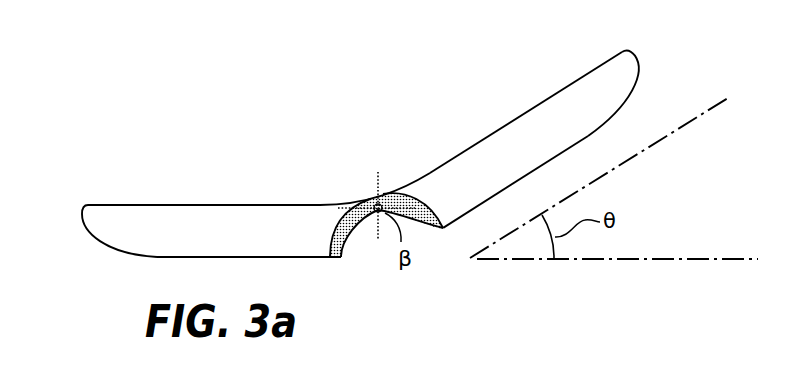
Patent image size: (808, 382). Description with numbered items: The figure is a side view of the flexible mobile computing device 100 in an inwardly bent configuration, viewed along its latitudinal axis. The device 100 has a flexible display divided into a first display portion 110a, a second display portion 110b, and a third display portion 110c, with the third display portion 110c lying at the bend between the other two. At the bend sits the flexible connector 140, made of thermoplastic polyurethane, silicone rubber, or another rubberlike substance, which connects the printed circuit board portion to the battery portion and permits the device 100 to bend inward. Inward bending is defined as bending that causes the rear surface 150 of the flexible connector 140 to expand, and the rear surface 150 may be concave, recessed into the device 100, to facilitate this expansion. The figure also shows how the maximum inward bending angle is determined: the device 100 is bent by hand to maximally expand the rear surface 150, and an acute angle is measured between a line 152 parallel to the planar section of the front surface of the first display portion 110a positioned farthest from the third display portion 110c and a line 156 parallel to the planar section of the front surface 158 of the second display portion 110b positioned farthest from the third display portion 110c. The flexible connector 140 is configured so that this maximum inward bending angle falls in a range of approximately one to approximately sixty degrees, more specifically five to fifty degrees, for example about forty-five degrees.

The flexible mobile computing device 100 is at (368, 170).
The first display portion 110a is at (520, 126).
The second display portion 110b is at (209, 182).
The third display portion 110c is at (360, 221).
The flexible connector 140 is at (368, 232).
The rear surface 150 is at (390, 244).
The line 152 is at (637, 155).
The line 156 is at (520, 260).
The front surface 158 is at (132, 198).